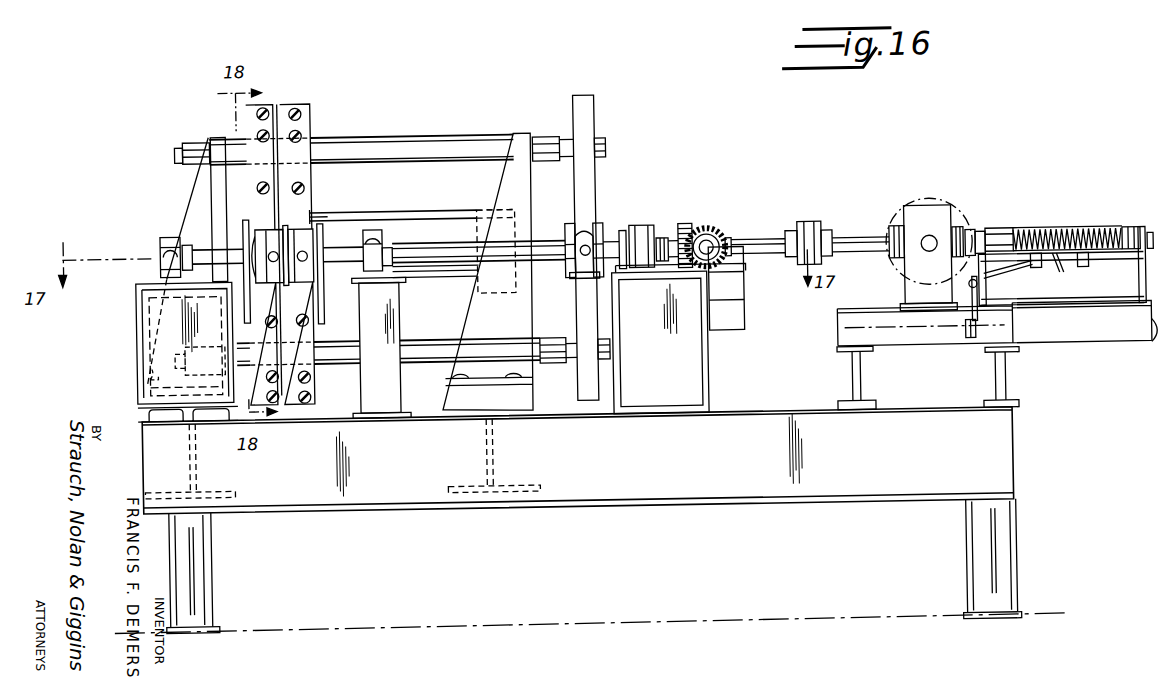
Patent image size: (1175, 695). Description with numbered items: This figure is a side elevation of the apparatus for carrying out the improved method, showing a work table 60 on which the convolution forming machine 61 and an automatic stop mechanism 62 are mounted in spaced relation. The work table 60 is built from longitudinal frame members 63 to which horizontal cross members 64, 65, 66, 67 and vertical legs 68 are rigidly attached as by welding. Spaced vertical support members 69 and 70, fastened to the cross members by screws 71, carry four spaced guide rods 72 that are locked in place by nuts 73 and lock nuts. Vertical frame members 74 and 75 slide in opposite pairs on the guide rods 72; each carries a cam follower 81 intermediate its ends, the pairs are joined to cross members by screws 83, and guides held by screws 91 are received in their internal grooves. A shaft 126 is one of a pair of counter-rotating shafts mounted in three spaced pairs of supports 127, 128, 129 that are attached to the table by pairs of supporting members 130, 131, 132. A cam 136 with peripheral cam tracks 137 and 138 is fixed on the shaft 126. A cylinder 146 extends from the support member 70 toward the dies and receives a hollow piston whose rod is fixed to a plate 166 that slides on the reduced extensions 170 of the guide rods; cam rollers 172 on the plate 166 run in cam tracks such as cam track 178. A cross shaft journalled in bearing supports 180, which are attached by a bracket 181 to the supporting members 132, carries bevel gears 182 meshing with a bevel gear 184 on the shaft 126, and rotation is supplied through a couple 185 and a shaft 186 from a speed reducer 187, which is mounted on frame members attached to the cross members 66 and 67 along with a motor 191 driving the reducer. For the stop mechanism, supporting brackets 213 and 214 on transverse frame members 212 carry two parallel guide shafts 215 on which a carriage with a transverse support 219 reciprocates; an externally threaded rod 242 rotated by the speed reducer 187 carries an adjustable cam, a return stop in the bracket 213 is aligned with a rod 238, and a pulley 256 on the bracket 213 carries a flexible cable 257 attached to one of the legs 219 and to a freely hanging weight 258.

The work table 60 is at (688, 510).
The convolution forming machine 61 is at (408, 253).
The automatic stop mechanism 62 is at (1059, 236).
The longitudinal frame members 63 is at (838, 502).
The horizontal cross member 64 is at (195, 466).
The horizontal cross member 65 is at (495, 455).
The horizontal cross member 66 is at (861, 380).
The horizontal cross member 67 is at (1006, 375).
The vertical legs 68 is at (210, 543).
The vertical support member 69 is at (192, 188).
The vertical support member 70 is at (504, 180).
The screws 71 is at (150, 365).
The guide rods 72 is at (438, 134).
The nuts 73 is at (220, 131).
The vertical frame member 74 is at (288, 408).
The vertical frame member 75 is at (314, 390).
The cam follower 81 is at (364, 231).
The screws 83 is at (300, 103).
The screws 91 is at (272, 184).
The shaft 126 is at (436, 239).
The supports 127 is at (150, 229).
The supports 128 is at (369, 208).
The supports 129 is at (646, 226).
The supporting members 130 is at (137, 283).
The supporting members 131 is at (401, 303).
The supporting members 132 is at (620, 318).
The cam 136 is at (302, 221).
The cam track 137 is at (300, 277).
The cam track 138 is at (268, 277).
The cylinder 146 is at (398, 208).
The plate 166 is at (599, 176).
The reduced extension 170 is at (604, 138).
The cam rollers 172 is at (571, 240).
The cam track 178 is at (583, 278).
The bearing supports 180 is at (750, 242).
The bracket 181 is at (746, 296).
The bevel gears 182 is at (722, 232).
The bevel gear 184 is at (690, 225).
The couple 185 is at (815, 225).
The shaft 186 is at (872, 257).
The speed reducer 187 is at (931, 212).
The motor 191 is at (898, 216).
The transverse frame members 212 is at (1157, 349).
The supporting bracket 213 is at (987, 294).
The supporting bracket 214 is at (1146, 290).
The guide shafts 215 is at (1140, 262).
The transverse support 219 is at (1061, 280).
The rod 238 is at (1084, 266).
The externally threaded rod 242 is at (1008, 235).
The pulley 256 is at (988, 316).
The flexible cable 257 is at (1038, 275).
The weight 258 is at (965, 344).